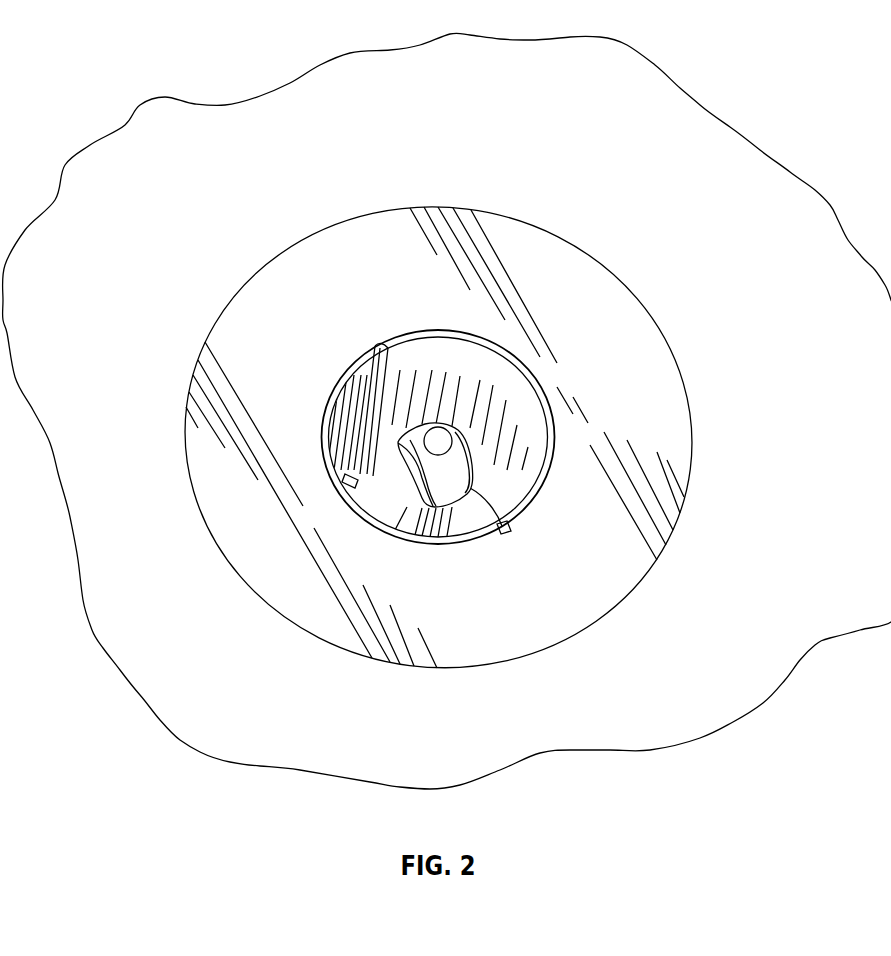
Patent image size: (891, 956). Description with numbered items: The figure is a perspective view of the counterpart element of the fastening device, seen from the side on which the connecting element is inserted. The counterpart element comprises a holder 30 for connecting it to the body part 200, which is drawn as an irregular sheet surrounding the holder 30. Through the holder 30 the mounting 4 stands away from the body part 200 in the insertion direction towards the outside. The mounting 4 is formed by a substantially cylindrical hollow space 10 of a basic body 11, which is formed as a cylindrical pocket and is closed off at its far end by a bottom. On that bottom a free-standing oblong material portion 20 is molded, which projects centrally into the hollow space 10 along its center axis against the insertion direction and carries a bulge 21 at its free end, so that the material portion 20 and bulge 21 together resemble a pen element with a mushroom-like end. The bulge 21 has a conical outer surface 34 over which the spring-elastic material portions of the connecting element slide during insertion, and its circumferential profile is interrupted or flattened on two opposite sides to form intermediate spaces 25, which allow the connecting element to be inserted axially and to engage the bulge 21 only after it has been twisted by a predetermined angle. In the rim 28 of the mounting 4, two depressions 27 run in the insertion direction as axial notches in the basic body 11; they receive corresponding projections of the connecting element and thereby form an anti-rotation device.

The body part 200 is at (140, 146).
The holder 30 is at (565, 261).
The rim 28 is at (520, 540).
The basic body 11 is at (525, 407).
The depressions 27 is at (378, 346).
The material portion 20 is at (451, 475).
The bulge 21 is at (439, 424).
The conical outer surface 34 is at (458, 480).
The intermediate spaces 25 is at (403, 470).
The mounting 4 is at (491, 452).
The hollow space 10 is at (491, 470).